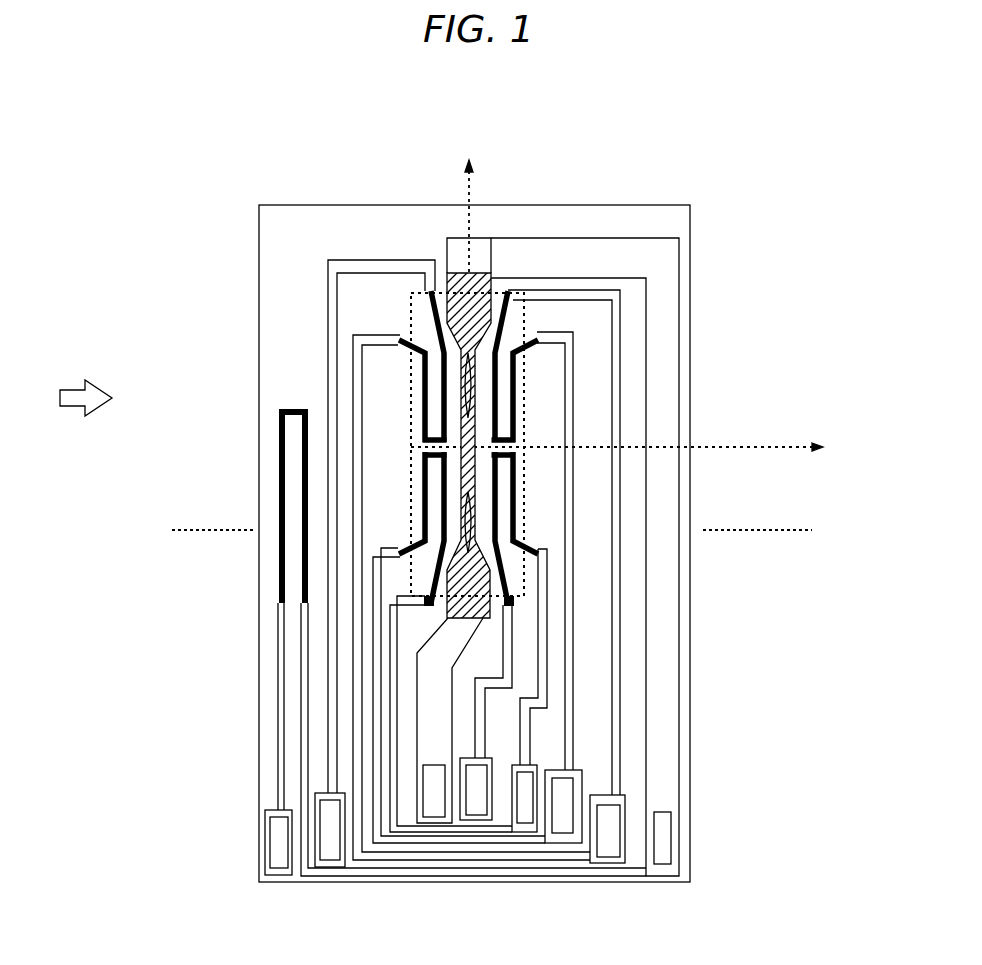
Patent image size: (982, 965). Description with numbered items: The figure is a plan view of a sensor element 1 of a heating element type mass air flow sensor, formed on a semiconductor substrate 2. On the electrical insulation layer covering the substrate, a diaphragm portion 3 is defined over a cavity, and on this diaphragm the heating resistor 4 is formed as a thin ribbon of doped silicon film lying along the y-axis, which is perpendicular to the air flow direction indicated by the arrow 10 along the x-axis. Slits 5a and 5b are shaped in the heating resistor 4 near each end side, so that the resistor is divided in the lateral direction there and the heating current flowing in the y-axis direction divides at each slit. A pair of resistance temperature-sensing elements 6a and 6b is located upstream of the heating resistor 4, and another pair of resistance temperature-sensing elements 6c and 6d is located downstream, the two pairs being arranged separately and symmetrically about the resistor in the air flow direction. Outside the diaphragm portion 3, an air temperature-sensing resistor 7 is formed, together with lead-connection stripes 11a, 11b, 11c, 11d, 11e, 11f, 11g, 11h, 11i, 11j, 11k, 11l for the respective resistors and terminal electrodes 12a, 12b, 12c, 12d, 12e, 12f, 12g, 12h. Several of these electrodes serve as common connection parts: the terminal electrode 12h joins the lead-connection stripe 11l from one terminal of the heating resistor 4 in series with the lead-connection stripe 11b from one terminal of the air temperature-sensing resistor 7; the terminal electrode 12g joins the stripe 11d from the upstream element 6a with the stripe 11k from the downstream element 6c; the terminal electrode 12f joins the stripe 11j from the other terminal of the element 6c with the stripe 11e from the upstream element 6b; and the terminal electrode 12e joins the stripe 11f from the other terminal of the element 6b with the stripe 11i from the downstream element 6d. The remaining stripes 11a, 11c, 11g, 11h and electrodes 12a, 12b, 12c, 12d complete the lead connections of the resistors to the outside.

The sensor element 1 is at (636, 190).
The semiconductor substrate 2 is at (517, 222).
The diaphragm portion 3 is at (525, 322).
The heating resistor 4 is at (463, 425).
The slit 5a is at (445, 275).
The slit 5b is at (465, 525).
The resistance temperature-sensing element 6a is at (420, 402).
The resistance temperature-sensing element 6b is at (423, 507).
The resistance temperature-sensing element 6c is at (512, 410).
The resistance temperature-sensing element 6d is at (512, 483).
The air temperature-sensing resistor 7 is at (283, 442).
The arrow 10 is at (76, 368).
The lead-connection stripe 11a is at (280, 647).
The lead-connection stripe 11b is at (305, 696).
The lead-connection stripe 11c is at (330, 740).
The lead-connection stripe 11d is at (357, 760).
The lead-connection stripe 11e is at (378, 835).
The lead-connection stripe 11f is at (397, 828).
The lead-connection stripe 11g is at (442, 662).
The lead-connection stripe 11h is at (510, 668).
The lead-connection stripe 11i is at (545, 690).
The lead-connection stripe 11j is at (572, 732).
The lead-connection stripe 11k is at (617, 772).
The lead-connection stripe 11l is at (663, 803).
The terminal electrode 12a is at (278, 845).
The terminal electrode 12b is at (330, 843).
The terminal electrode 12c is at (433, 800).
The terminal electrode 12d is at (475, 797).
The terminal electrode 12e is at (520, 810).
The terminal electrode 12f is at (560, 813).
The terminal electrode 12g is at (608, 840).
The terminal electrode 12h is at (660, 842).